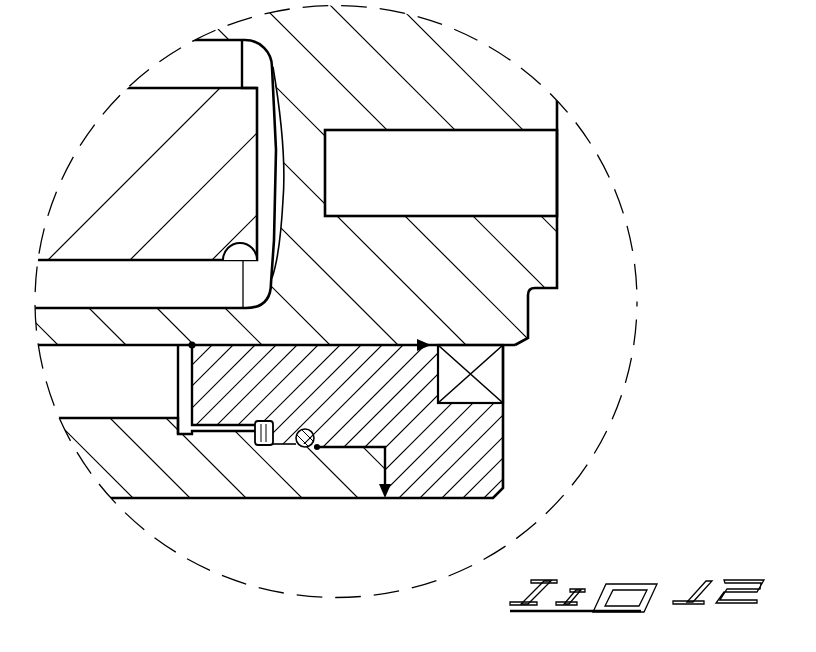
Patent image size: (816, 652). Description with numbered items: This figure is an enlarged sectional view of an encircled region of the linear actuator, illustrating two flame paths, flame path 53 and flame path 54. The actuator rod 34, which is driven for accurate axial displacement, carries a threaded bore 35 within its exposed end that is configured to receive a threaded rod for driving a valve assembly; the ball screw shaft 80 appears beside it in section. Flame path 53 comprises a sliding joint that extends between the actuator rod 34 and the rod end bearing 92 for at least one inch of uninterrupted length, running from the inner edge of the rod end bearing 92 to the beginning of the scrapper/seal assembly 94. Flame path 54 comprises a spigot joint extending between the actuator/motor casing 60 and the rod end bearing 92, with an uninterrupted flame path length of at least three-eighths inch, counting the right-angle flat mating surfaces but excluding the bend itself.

The actuator rod 34 is at (557, 253).
The threaded bore 35 is at (399, 131).
The ball screw shaft 80 is at (179, 203).
The flame path 54 is at (383, 345).
The scrapper/seal assembly 94 is at (494, 374).
The rod end bearing 92 is at (437, 472).
The flame path 53 is at (346, 450).
The actuator/motor casing 60 is at (148, 485).